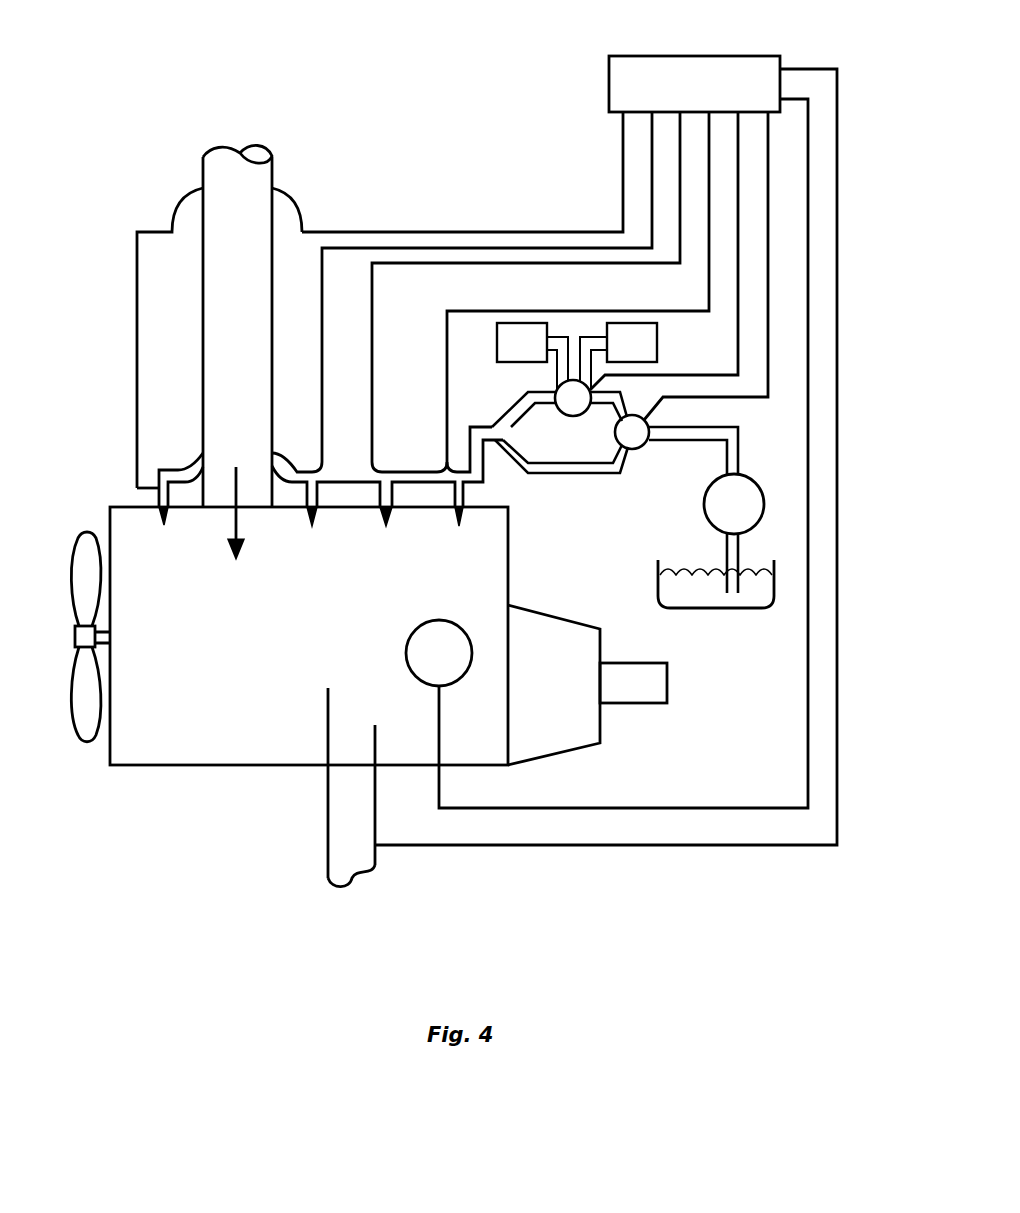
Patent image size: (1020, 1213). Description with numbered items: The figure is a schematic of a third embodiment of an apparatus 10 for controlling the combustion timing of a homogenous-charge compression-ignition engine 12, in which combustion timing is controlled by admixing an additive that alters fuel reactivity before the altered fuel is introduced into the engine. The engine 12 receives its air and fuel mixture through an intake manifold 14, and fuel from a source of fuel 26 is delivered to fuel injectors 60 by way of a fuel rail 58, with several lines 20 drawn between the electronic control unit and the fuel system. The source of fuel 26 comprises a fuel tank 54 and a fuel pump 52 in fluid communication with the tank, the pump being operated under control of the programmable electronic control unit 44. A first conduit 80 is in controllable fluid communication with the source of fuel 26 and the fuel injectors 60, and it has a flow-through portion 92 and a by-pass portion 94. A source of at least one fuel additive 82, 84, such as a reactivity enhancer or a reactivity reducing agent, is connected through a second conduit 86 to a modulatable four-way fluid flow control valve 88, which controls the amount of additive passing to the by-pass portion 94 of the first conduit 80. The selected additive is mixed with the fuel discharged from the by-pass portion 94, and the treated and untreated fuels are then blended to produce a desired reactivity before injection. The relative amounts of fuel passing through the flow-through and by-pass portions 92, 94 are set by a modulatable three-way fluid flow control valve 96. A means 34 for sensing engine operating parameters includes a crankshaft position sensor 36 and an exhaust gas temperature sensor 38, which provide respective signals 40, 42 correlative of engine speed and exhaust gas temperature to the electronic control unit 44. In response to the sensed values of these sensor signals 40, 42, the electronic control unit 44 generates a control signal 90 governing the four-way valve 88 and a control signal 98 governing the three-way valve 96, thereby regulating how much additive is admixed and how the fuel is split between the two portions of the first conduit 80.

The apparatus 10 is at (388, 165).
The homogenous-charge compression-ignition engine 12 is at (256, 666).
The intake manifold 14 is at (248, 314).
The control/fuel lines 20 is at (400, 235).
The source of fuel 26 is at (774, 538).
The means for sensing at least one engine operating parameter 34 is at (447, 873).
The crankshaft position sensor 36 is at (452, 665).
The exhaust gas temperature sensor 38 is at (328, 822).
The signal 40 is at (660, 807).
The signal 42 is at (660, 846).
The programmable electronic control unit 44 is at (708, 96).
The fuel pump 52 is at (747, 516).
The fuel tank 54 is at (700, 599).
The fuel rail 58 is at (407, 470).
The fuel injectors 60 is at (163, 526).
The first conduit 80 is at (584, 481).
The fuel additive 82 is at (533, 355).
The fuel additive 84 is at (643, 355).
The second conduit 86 is at (586, 343).
The modulatable four-way fluid flow control valve 88 is at (585, 408).
The control signal 90 is at (738, 228).
The flow-through portion 92 is at (582, 477).
The by-pass portion 94 is at (523, 402).
The modulatable three-way fluid flow control valve 96 is at (644, 450).
The control signal 98 is at (768, 336).